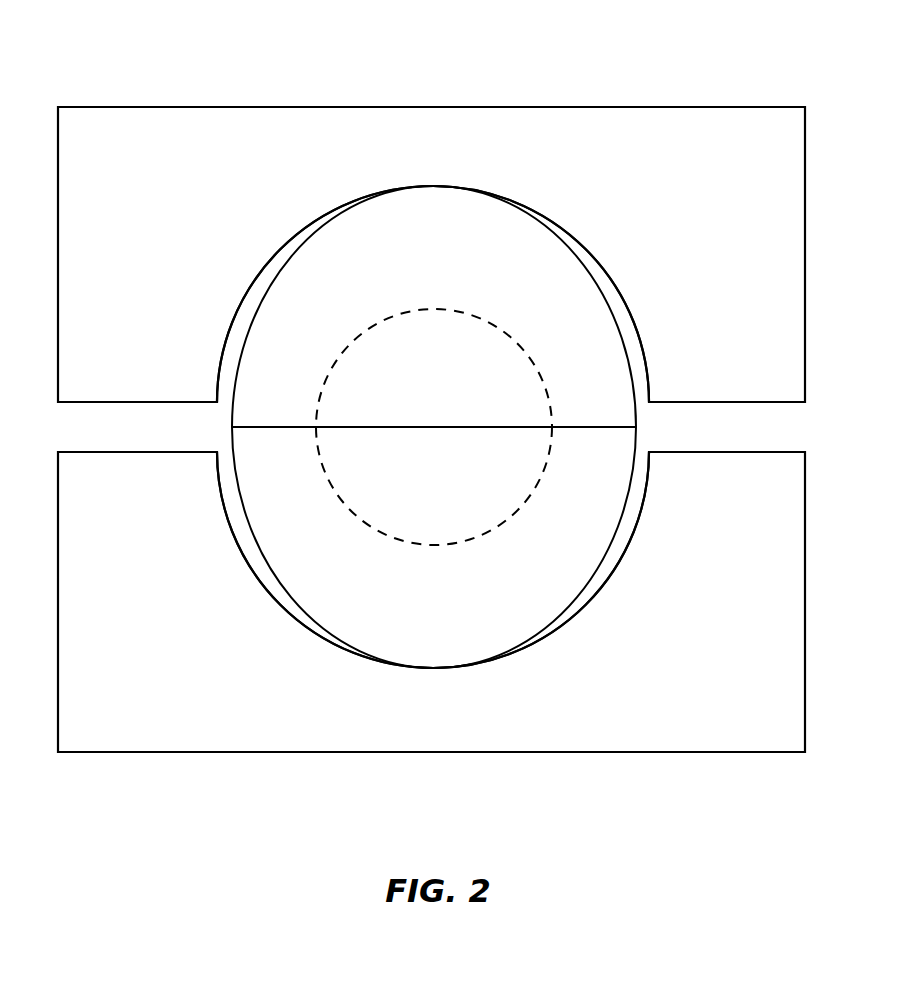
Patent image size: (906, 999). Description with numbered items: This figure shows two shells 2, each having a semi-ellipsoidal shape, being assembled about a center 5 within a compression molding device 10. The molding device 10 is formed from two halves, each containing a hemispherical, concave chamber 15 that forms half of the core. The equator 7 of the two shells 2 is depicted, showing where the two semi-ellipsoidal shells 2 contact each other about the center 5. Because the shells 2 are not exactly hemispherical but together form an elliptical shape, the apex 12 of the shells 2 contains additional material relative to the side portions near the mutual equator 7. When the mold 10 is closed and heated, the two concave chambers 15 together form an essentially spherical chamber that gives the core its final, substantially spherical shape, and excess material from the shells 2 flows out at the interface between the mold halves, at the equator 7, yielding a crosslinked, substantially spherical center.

The compression molding device 10 is at (257, 100).
The apex 12 is at (433, 186).
The shell 2 is at (413, 222).
The center 5 is at (400, 402).
The equator 7 is at (543, 428).
The hemispherical, concave chamber 15 is at (640, 380).